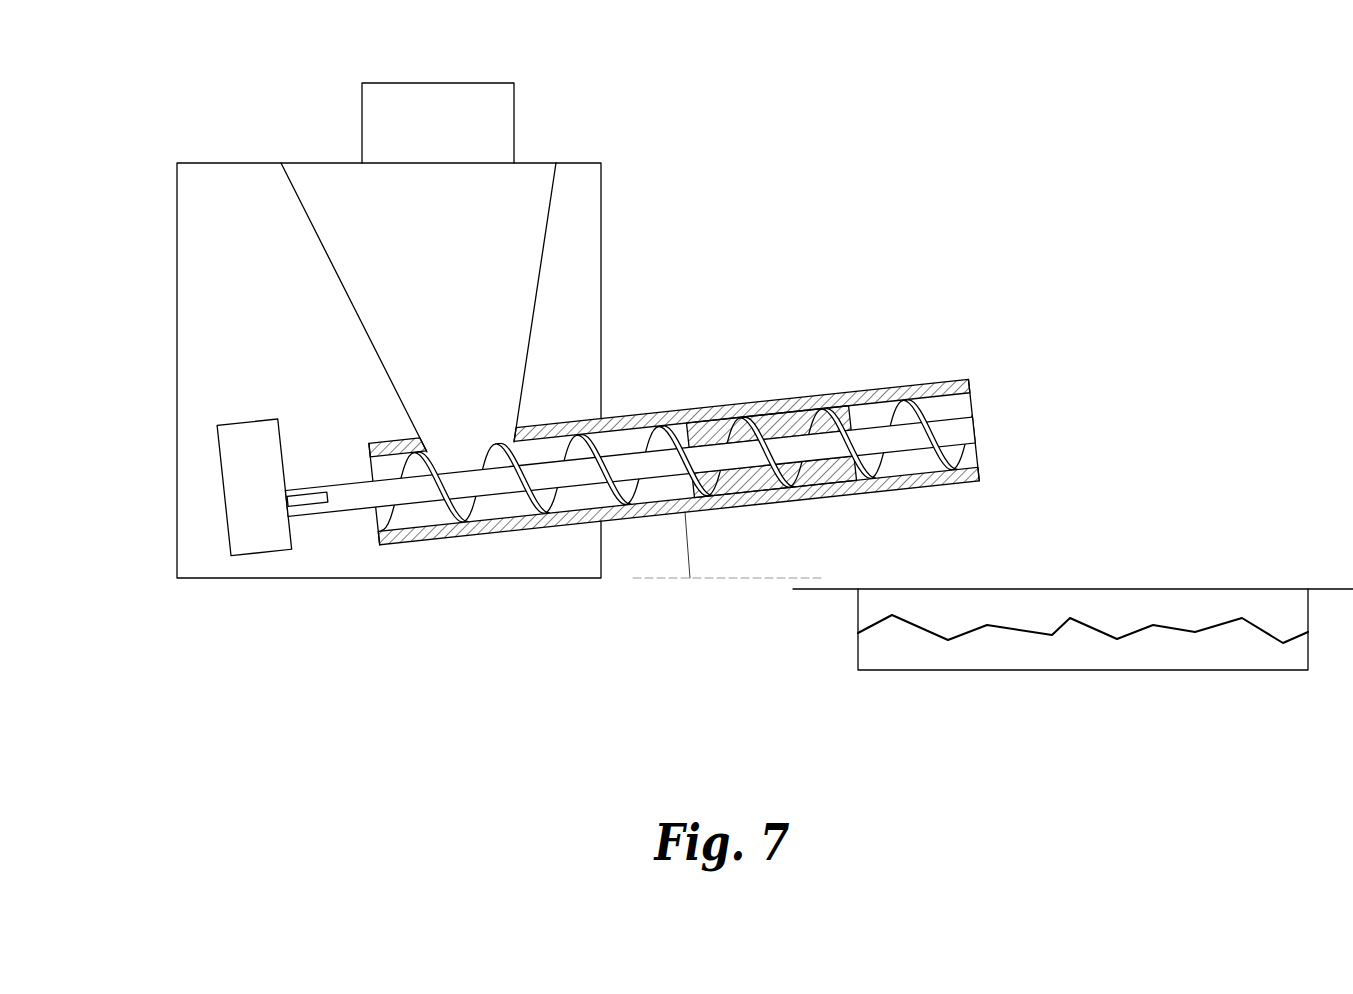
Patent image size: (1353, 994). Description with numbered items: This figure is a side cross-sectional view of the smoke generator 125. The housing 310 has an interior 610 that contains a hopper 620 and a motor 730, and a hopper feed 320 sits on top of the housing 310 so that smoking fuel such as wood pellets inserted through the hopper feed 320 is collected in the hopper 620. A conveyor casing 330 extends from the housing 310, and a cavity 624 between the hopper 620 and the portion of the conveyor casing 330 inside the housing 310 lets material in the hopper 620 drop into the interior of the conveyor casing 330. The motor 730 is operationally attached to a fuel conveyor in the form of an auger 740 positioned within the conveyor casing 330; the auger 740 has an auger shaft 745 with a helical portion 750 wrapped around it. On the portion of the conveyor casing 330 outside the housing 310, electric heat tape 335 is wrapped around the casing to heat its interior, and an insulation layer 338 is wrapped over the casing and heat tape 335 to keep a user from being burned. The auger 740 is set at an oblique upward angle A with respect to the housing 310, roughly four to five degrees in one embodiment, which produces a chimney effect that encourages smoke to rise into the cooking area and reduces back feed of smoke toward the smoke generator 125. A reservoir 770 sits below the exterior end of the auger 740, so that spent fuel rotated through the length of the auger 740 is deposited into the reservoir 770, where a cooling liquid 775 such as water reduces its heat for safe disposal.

The smoke generator 125 is at (208, 102).
The housing 310 is at (177, 230).
The hopper feed 320 is at (406, 112).
The interior 610 is at (203, 385).
The hopper 620 is at (515, 259).
The cavity 624 is at (483, 428).
The conveyor casing 330 is at (883, 415).
The electric heat tape 335 is at (785, 420).
The insulation layer 338 is at (847, 402).
The motor 730 is at (270, 545).
The auger 740 is at (362, 505).
The auger shaft 745 is at (483, 487).
The helical portion 750 is at (625, 490).
The reservoir 770 is at (1270, 610).
The cooling liquid 775 is at (1083, 647).
The oblique upward angle A is at (728, 545).